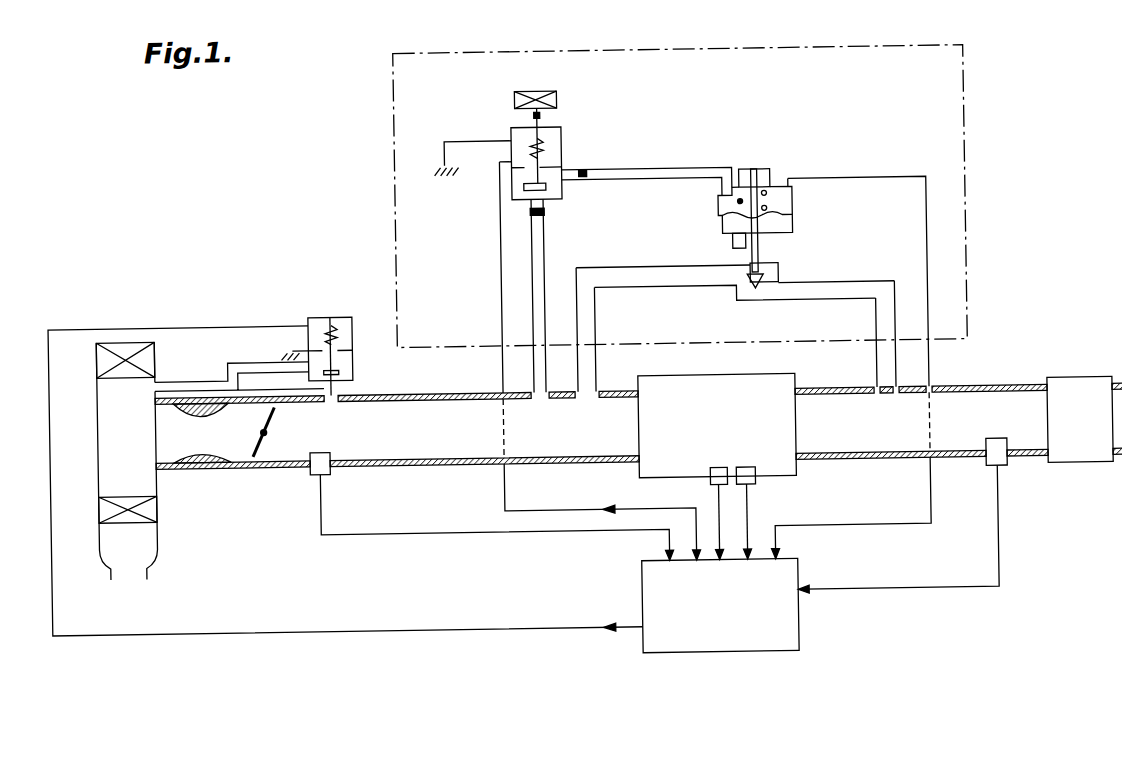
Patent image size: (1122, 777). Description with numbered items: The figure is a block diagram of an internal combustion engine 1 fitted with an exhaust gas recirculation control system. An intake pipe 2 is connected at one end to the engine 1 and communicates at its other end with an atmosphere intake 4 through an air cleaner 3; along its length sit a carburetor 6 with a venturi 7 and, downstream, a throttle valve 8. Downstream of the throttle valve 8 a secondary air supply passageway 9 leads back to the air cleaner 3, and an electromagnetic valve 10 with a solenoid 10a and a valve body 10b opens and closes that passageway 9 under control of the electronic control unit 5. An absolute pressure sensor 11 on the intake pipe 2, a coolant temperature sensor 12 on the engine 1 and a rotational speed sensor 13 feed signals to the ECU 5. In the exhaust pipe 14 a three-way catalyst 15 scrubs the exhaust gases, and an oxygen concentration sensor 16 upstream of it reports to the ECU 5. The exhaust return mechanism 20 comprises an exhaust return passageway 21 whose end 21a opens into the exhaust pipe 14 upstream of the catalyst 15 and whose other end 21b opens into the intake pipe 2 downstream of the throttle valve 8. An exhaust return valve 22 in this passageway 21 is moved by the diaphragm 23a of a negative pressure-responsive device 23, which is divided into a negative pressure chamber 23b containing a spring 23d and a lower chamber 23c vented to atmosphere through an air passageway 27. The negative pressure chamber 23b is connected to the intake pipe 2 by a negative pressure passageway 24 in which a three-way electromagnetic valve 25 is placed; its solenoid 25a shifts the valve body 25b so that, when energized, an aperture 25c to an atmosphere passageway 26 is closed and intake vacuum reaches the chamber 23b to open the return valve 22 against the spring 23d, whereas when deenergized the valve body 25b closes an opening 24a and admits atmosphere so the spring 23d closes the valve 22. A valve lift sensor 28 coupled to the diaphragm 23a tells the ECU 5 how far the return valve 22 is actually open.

The internal combustion engine 1 is at (710, 377).
The intake pipe 2 is at (453, 444).
The air cleaner 3 is at (103, 363).
The atmosphere intake 4 is at (125, 561).
The electronic control unit 5 is at (795, 626).
The carburetor 6 is at (229, 470).
The venturi 7 is at (200, 451).
The throttle valve 8 is at (264, 454).
The secondary air supply passageway 9 is at (196, 375).
The electromagnetic valve 10 is at (342, 333).
The solenoid 10a is at (333, 325).
The valve body 10b is at (340, 371).
The absolute pressure sensor 11 is at (327, 473).
The engine coolant temperature sensor 12 is at (709, 485).
The engine rotational speed sensor 13 is at (754, 484).
The exhaust pipe 14 is at (892, 439).
The three-way catalyst 15 is at (1075, 471).
The oxygen concentration sensor 16 is at (999, 473).
The exhaust return mechanism 20 is at (976, 266).
The exhaust return passageway 21 is at (641, 288).
The end of exhaust return passageway 21a is at (877, 400).
The other end of exhaust return passageway 21b is at (586, 399).
The exhaust return valve 22 is at (781, 279).
The negative pressure-responsive device 23 is at (755, 179).
The diaphragm 23a is at (797, 208).
The negative pressure chamber 23b is at (721, 204).
The lower chamber 23c is at (797, 231).
The spring 23d is at (767, 193).
The negative pressure passageway 24 is at (617, 253).
The opening 24a is at (548, 191).
The three-way electromagnetic valve 25 is at (524, 164).
The solenoid 25a is at (532, 146).
The valve body 25b is at (551, 182).
The aperture 25c is at (529, 172).
The atmosphere passageway 26 is at (548, 113).
The air passageway 27 is at (739, 250).
The valve lift sensor 28 is at (748, 172).